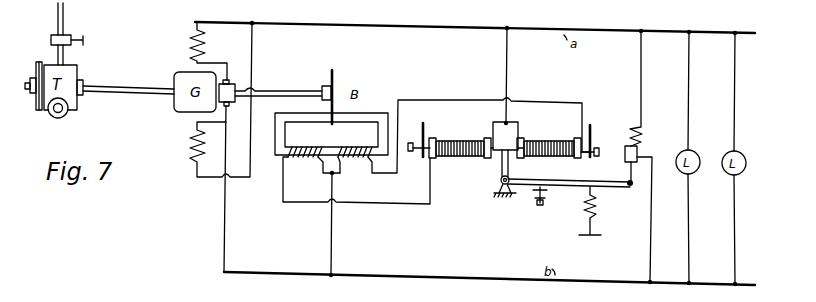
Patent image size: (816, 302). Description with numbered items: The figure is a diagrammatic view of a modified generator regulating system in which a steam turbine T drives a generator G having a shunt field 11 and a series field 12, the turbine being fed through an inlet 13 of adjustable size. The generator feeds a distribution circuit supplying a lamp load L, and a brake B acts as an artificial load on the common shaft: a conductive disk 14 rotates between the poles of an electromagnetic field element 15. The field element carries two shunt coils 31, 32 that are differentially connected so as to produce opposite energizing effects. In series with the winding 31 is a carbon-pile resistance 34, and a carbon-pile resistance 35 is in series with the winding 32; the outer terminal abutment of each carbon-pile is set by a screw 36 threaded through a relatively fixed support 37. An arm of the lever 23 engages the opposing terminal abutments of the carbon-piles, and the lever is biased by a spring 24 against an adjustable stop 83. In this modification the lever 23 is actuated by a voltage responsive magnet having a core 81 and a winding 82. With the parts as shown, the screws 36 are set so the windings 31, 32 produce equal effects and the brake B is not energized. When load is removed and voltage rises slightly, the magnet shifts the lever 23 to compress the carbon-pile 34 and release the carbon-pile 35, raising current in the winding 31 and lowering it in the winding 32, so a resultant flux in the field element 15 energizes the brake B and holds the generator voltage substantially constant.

The shunt field 11 is at (184, 146).
The series field 12 is at (184, 46).
The inlet 13 is at (68, 6).
The disk 14 is at (334, 76).
The field element 15 is at (331, 134).
The lever 23 is at (570, 187).
The spring 24 is at (597, 218).
The shunt coil 31 is at (304, 159).
The shunt coil 32 is at (353, 159).
The carbon-pile resistance 34 is at (460, 142).
The carbon-pile resistance 35 is at (549, 142).
The screw 36 is at (411, 152).
The support 37 is at (425, 131).
The core 81 is at (637, 135).
The winding 82 is at (639, 153).
The adjustable stop 83 is at (538, 199).